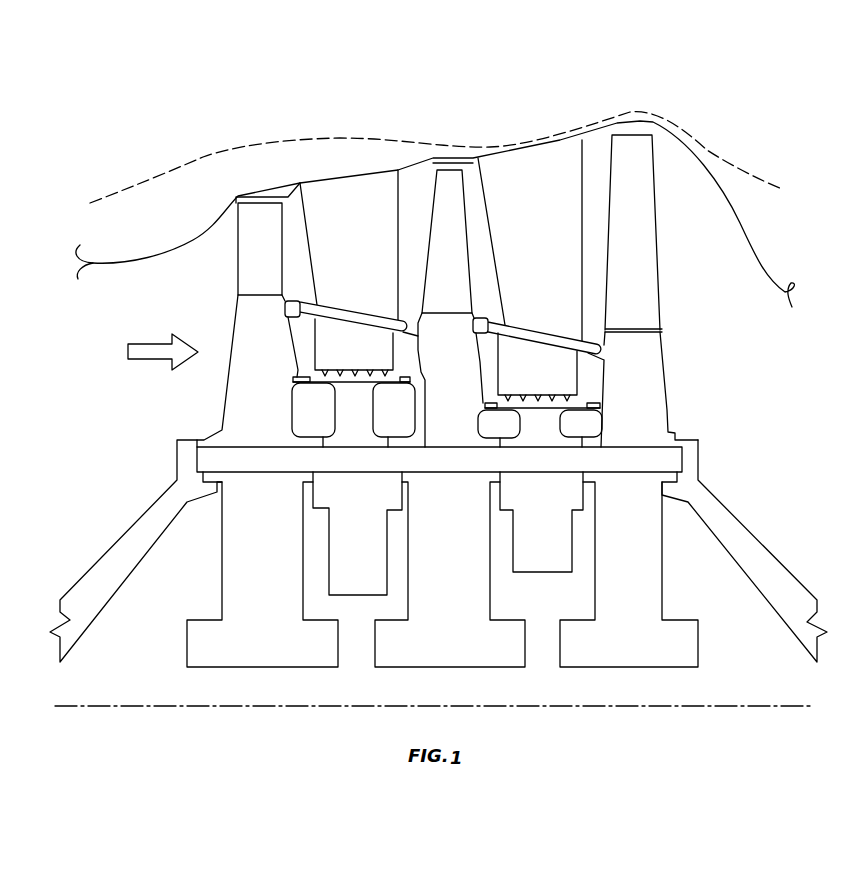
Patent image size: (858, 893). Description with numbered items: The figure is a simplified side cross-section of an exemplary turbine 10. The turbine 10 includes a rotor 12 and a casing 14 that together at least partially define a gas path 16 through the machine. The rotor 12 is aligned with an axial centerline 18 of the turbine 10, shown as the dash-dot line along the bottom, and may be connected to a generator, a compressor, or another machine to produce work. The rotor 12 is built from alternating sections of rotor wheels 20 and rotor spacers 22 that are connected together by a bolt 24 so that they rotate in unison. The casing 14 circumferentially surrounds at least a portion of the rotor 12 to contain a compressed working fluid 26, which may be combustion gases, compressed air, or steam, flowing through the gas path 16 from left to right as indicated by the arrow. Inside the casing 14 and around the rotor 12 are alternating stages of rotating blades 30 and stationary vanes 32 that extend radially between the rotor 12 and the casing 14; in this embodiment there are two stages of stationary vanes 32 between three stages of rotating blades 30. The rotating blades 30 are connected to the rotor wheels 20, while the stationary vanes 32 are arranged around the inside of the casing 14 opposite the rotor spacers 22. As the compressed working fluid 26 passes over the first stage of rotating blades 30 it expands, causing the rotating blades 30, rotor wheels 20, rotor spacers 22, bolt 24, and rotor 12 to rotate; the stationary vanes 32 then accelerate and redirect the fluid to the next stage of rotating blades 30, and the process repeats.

The turbine 10 is at (200, 157).
The rotor 12 is at (592, 711).
The casing 14 is at (706, 168).
The gas path 16 is at (192, 313).
The axial centerline 18 is at (793, 706).
The rotor wheels 20 is at (252, 408).
The rotor spacers 22 is at (344, 420).
The bolt 24 is at (640, 447).
The compressed working fluid 26 is at (148, 352).
The rotating blades 30 is at (249, 235).
The stationary vanes 32 is at (349, 225).